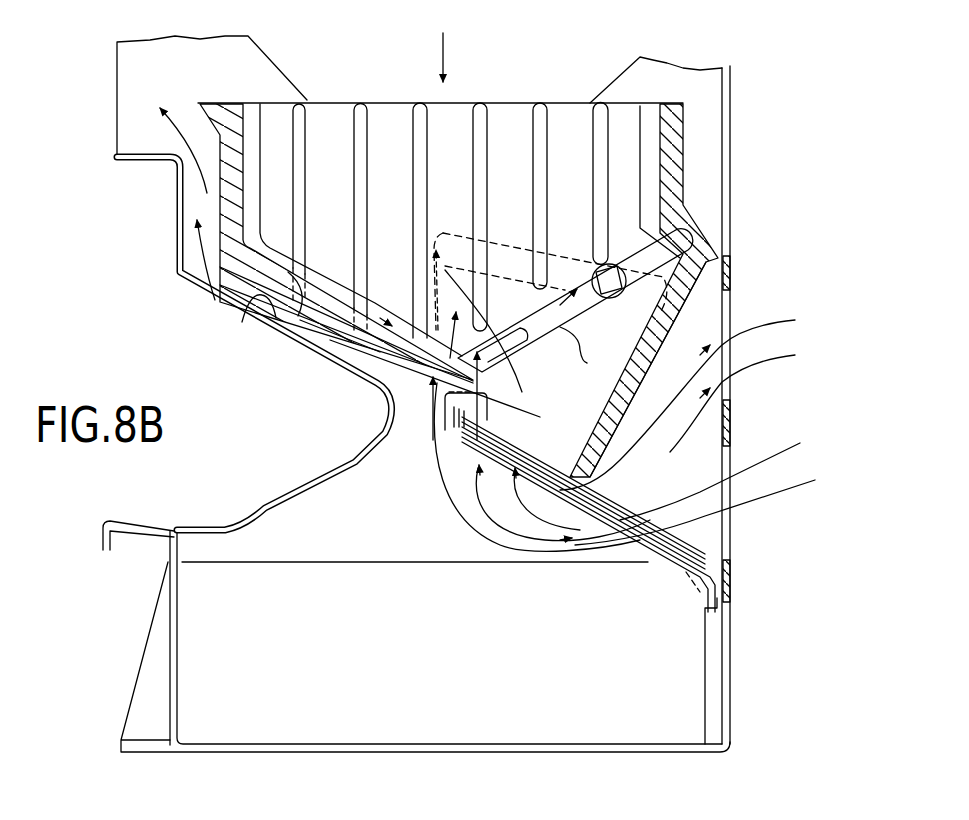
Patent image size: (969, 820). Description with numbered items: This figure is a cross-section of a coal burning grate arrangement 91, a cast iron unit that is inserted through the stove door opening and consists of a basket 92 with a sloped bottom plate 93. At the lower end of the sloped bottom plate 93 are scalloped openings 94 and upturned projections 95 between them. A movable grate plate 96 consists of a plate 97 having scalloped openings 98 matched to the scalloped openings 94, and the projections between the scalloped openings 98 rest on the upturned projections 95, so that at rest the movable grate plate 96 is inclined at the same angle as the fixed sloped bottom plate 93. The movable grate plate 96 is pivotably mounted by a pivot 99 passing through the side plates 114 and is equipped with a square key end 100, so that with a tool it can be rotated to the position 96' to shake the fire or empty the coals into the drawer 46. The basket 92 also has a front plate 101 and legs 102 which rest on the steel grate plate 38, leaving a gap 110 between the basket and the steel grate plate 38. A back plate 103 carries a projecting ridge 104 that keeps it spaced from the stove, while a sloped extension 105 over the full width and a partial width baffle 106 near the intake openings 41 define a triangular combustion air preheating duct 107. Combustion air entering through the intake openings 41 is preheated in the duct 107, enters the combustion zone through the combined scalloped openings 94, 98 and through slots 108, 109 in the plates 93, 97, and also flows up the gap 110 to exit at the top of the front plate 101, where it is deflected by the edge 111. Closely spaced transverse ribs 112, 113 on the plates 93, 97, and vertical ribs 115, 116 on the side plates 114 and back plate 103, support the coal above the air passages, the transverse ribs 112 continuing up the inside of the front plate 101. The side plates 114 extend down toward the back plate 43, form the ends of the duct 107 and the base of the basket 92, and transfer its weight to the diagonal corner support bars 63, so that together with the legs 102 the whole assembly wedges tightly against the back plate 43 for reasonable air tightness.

The steel grate plate 38 is at (297, 352).
The intake openings 41 is at (732, 307).
The back plate 43 is at (732, 160).
The drawer 46 is at (158, 589).
The diagonal corner support bars 63 is at (650, 560).
The coal burning grate arrangement 91 is at (443, 43).
The basket 92 is at (198, 259).
The sloped bottom plate 93 is at (262, 302).
The scalloped openings 94 is at (427, 393).
The upturned projections 95 is at (480, 397).
The movable grate plate 96 is at (602, 321).
The rotated position of movable grate plate 96' is at (550, 278).
The plate 97 is at (512, 342).
The scalloped openings 98 is at (523, 393).
The pivot 99 is at (640, 248).
The square key end 100 is at (587, 255).
The front plate 101 is at (218, 192).
The legs 102 is at (222, 306).
The back plate 103 is at (683, 203).
The projecting ridge 104 is at (707, 237).
The sloped extension 105 is at (665, 366).
The partial width baffle 106 is at (647, 487).
The combustion air preheating duct 107 is at (690, 437).
The slots 108 is at (330, 370).
The slots 109 is at (550, 330).
The gap 110 is at (373, 380).
The edge 111 is at (197, 100).
The transverse ribs 112 is at (326, 250).
The transverse ribs 113 is at (530, 305).
The side plates 114 is at (392, 102).
The vertical ribs 115 is at (430, 182).
The vertical ribs 116 is at (640, 153).